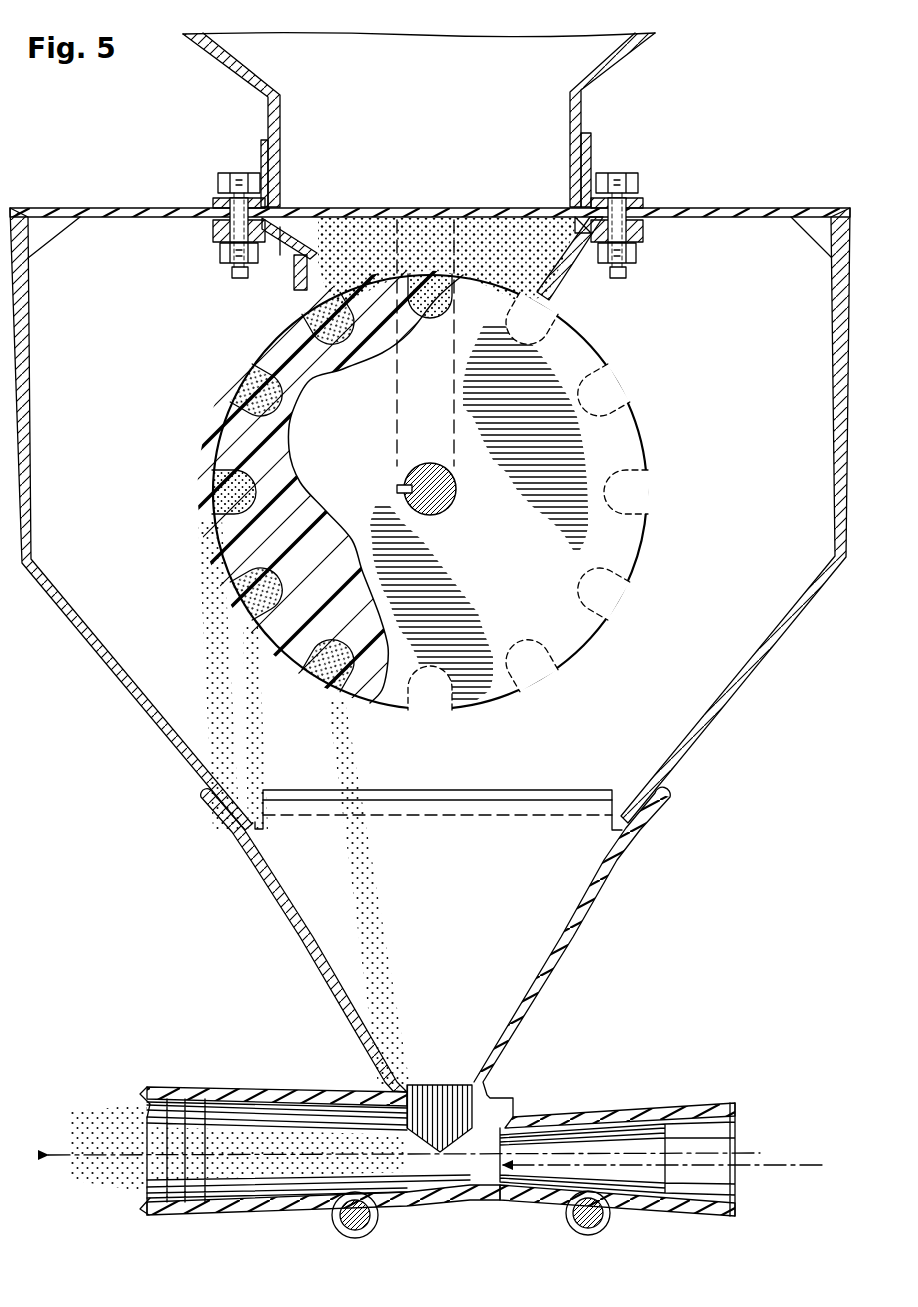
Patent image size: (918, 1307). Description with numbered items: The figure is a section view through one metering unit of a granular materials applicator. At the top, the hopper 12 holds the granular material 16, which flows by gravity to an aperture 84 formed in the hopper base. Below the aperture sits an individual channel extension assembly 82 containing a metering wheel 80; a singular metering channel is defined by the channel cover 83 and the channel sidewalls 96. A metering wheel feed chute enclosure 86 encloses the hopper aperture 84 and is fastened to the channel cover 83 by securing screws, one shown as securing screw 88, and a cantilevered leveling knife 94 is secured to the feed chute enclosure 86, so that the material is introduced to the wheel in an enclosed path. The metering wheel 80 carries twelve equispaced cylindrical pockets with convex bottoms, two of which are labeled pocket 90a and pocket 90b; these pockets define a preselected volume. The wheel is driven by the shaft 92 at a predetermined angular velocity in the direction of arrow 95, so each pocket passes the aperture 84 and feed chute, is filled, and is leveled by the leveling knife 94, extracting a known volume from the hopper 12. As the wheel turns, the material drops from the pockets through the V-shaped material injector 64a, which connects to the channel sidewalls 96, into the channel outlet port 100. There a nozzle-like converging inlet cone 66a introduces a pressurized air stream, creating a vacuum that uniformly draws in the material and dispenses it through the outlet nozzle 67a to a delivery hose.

The hopper 12 is at (612, 68).
The granular material 16 is at (262, 80).
The metering wheel 80 is at (425, 480).
The channel extension assembly 82 is at (430, 510).
The channel cover 83 is at (695, 206).
The aperture 84 is at (265, 158).
The metering wheel feed chute enclosure 86 is at (558, 268).
The securing screw 88 is at (625, 168).
The pocket 90a is at (240, 383).
The pocket 90b is at (218, 492).
The shaft 92 is at (452, 506).
The leveling knife 94 is at (290, 318).
The arrow 95 is at (207, 388).
The channel sidewalls 96 is at (721, 718).
The V-shaped material injector 64a is at (313, 953).
The converging inlet cone 66a is at (737, 1127).
The outlet nozzle 67a is at (147, 1112).
The channel outlet port 100 is at (435, 1146).